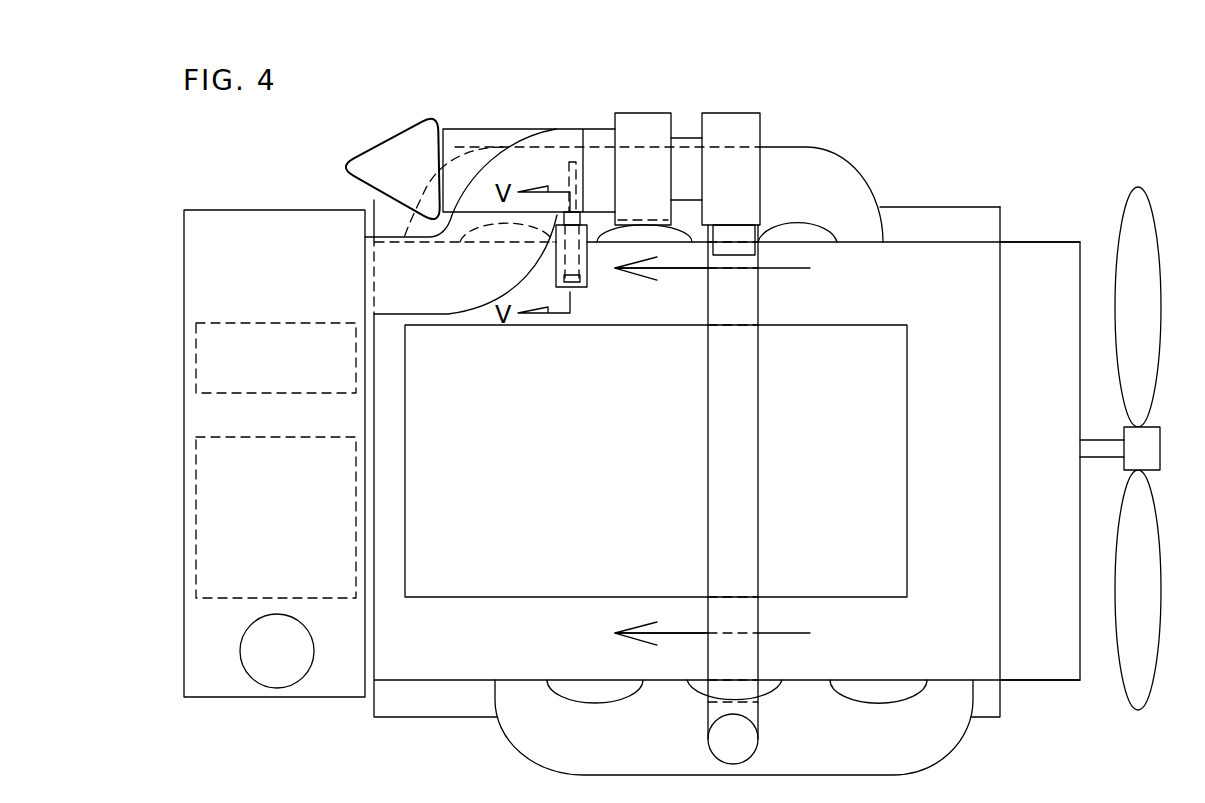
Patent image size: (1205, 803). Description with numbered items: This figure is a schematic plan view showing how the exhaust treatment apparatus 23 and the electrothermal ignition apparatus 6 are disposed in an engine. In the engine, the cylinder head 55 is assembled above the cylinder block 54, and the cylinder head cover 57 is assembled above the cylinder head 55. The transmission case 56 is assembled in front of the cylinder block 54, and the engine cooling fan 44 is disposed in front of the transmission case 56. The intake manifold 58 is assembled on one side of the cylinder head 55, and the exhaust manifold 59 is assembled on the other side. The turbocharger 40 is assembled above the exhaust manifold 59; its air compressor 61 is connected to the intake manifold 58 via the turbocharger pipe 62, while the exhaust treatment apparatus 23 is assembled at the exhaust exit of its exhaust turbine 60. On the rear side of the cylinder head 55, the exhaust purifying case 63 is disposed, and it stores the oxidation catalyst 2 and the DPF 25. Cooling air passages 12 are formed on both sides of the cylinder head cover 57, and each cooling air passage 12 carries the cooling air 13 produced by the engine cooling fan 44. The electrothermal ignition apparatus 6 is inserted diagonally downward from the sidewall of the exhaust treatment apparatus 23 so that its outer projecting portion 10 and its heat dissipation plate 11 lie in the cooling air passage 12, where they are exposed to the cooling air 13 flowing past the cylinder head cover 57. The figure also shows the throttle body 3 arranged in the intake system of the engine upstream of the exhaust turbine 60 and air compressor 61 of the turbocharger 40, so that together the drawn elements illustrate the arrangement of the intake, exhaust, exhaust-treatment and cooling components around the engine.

The oxidation catalyst 2 is at (205, 358).
The throttle body 3 is at (375, 136).
The electrothermal ignition apparatus 6 is at (578, 184).
The outer projecting portion 10 is at (583, 268).
The heat dissipation plate 11 is at (556, 262).
The cooling air passage 12 is at (699, 314).
The cooling air 13 is at (800, 270).
The exhaust treatment apparatus 23 is at (524, 119).
The DPF 25 is at (215, 516).
The turbocharger 40 is at (692, 126).
The engine cooling fan 44 is at (1143, 212).
The cylinder block 54 is at (912, 215).
The cylinder head 55 is at (985, 385).
The transmission case 56 is at (1040, 250).
The cylinder head cover 57 is at (880, 368).
The intake manifold 58 is at (930, 748).
The exhaust manifold 59 is at (800, 160).
The exhaust turbine 60 is at (632, 120).
The air compressor 61 is at (733, 118).
The turbocharger pipe 62 is at (745, 462).
The exhaust purifying case 63 is at (200, 260).